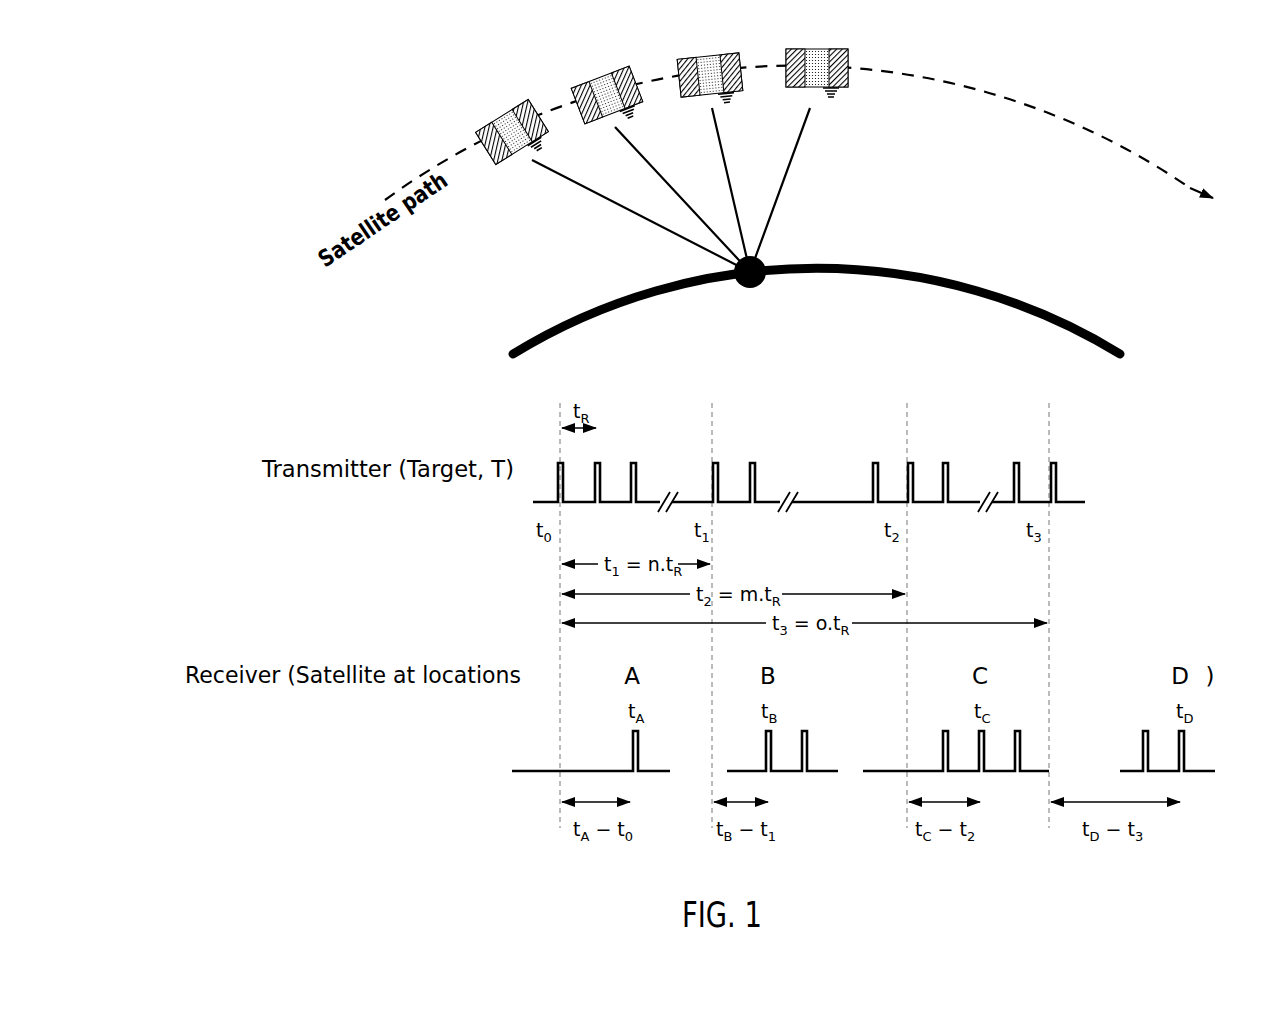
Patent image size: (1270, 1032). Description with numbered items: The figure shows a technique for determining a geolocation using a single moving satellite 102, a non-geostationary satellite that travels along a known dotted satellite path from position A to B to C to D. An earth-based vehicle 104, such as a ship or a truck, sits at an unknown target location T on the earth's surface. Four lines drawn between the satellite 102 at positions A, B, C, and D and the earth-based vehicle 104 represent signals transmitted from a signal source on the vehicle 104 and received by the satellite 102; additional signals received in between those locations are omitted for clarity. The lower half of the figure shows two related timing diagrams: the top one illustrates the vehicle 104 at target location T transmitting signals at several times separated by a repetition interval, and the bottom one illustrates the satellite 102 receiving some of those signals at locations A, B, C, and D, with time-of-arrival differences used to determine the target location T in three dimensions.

The satellite 102 is at (446, 115).
The earth-based vehicle 104 is at (907, 273).
The satellite position A is at (513, 124).
The satellite position B is at (608, 87).
The satellite position C is at (710, 67).
The satellite position D is at (817, 58).
The target location T is at (759, 307).